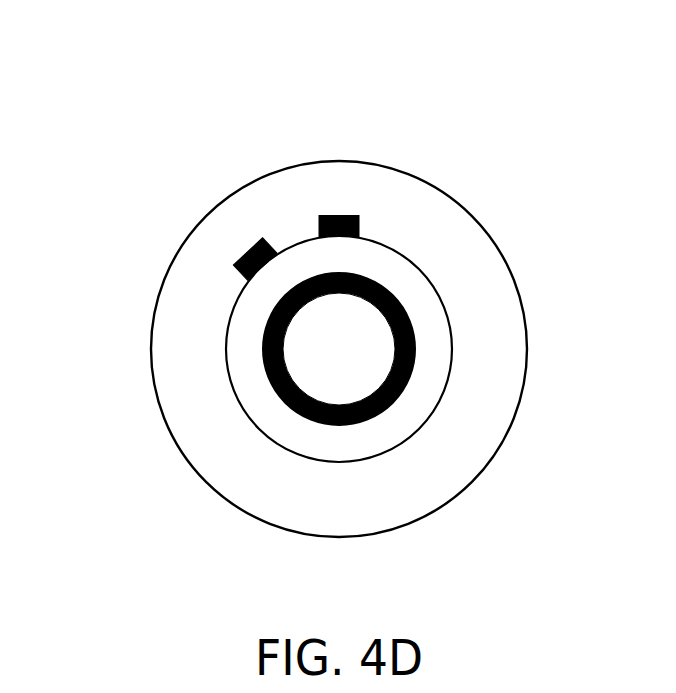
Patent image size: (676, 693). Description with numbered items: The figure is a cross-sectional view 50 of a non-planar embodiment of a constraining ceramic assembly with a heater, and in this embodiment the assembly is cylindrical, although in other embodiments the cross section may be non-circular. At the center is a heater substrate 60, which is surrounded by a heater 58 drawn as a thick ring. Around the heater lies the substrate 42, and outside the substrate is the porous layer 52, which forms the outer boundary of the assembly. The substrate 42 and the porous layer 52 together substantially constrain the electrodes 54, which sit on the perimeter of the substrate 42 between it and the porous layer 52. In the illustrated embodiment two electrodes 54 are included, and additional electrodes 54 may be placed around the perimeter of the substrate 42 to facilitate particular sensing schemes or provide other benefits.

The cross-sectional view 50 is at (153, 96).
The porous layer 52 is at (343, 161).
The substrate 42 is at (452, 348).
The electrodes 54 is at (267, 240).
The heater 58 is at (343, 425).
The heater substrate 60 is at (352, 370).